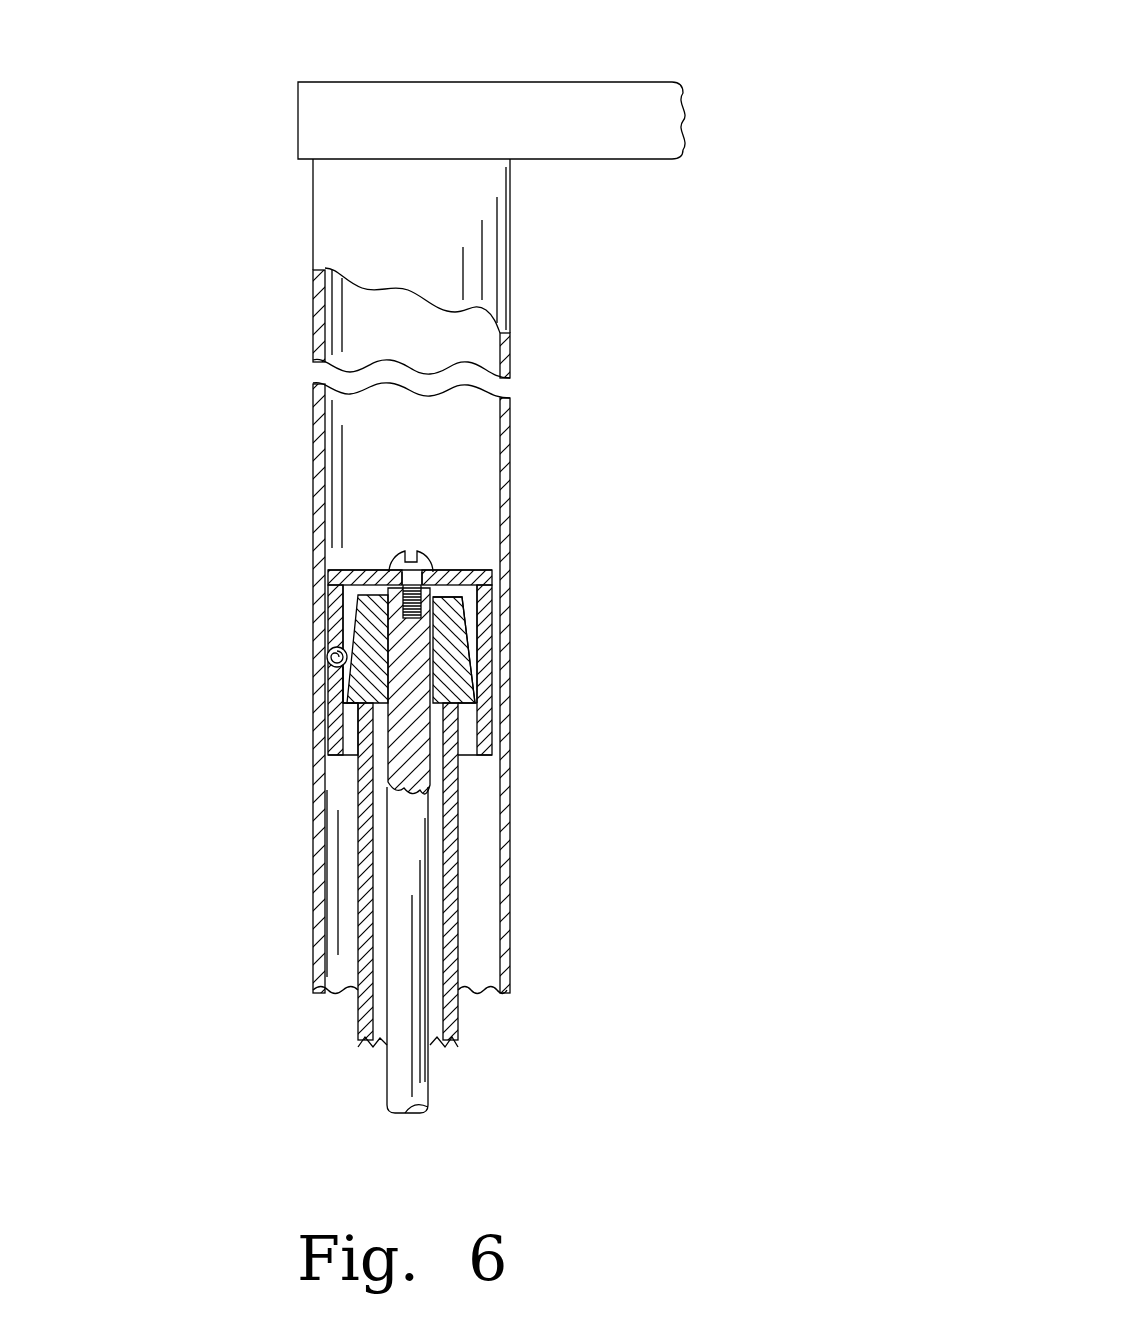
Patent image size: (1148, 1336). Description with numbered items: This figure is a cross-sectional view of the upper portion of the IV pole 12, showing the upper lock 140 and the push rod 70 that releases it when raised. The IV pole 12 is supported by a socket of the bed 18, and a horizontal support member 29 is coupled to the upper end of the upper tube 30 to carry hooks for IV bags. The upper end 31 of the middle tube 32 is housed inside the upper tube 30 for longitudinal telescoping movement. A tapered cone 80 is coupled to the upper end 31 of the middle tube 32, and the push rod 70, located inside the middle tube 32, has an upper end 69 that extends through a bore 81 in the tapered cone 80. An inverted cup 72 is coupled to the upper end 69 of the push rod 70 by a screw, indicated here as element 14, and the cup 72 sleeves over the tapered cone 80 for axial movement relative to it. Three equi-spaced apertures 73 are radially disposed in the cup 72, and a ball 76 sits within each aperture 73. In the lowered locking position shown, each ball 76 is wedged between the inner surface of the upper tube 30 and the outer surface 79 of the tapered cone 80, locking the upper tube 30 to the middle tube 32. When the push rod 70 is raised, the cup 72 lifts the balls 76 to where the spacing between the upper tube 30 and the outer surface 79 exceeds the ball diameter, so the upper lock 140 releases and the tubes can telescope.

The IV pole 12 is at (680, 220).
The screw 14 is at (427, 555).
The bed 18 is at (325, 468).
The horizontal support member 29 is at (543, 88).
The upper tube 30 is at (512, 422).
The upper end of the middle tube 31 is at (452, 827).
The middle tube 32 is at (457, 1030).
The upper end of the push rod 69 is at (493, 575).
The push rod 70 is at (420, 1086).
The inverted cup 72 is at (487, 708).
The apertures 73 is at (337, 677).
The ball 76 is at (327, 651).
The outer surface of the tapered cone 79 is at (463, 595).
The tapered cone 80 is at (460, 630).
The bore 81 is at (419, 677).
The upper lock 140 is at (268, 601).